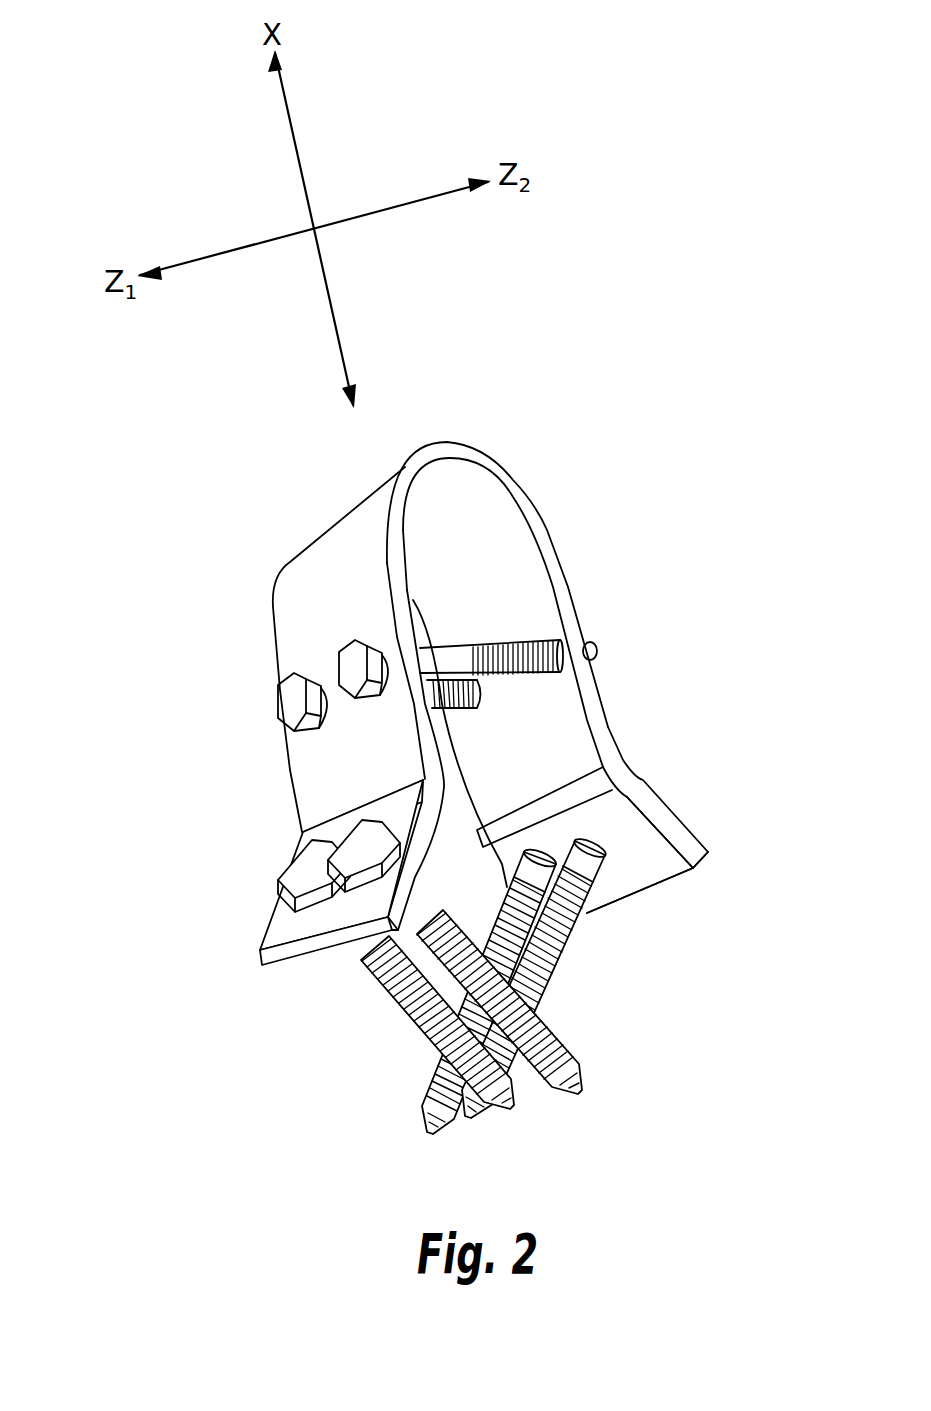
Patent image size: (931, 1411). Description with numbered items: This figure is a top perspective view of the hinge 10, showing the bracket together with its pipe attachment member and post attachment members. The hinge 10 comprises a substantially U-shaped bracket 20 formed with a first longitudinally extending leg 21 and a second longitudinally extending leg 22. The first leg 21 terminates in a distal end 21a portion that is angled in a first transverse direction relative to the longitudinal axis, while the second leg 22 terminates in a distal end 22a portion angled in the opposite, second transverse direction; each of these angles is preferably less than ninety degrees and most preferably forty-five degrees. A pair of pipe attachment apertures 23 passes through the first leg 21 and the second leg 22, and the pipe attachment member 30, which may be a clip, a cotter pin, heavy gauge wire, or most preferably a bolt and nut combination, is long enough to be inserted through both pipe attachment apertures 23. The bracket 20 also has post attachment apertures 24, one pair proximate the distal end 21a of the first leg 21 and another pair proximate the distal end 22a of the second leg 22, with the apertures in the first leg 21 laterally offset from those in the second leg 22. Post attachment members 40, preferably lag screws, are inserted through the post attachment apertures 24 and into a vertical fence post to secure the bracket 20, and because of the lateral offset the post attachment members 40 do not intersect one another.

The hinge 10 is at (217, 505).
The bracket 20 is at (479, 729).
The first leg 21 is at (292, 790).
The distal end portion of the first leg 21a is at (266, 962).
The second leg 22 is at (613, 707).
The distal end portion of the second leg 22a is at (684, 869).
The pipe attachment apertures 23 is at (296, 732).
The post attachment apertures 24 is at (328, 897).
The pipe attachment member 30 is at (597, 650).
The post attachment members 40 is at (560, 963).